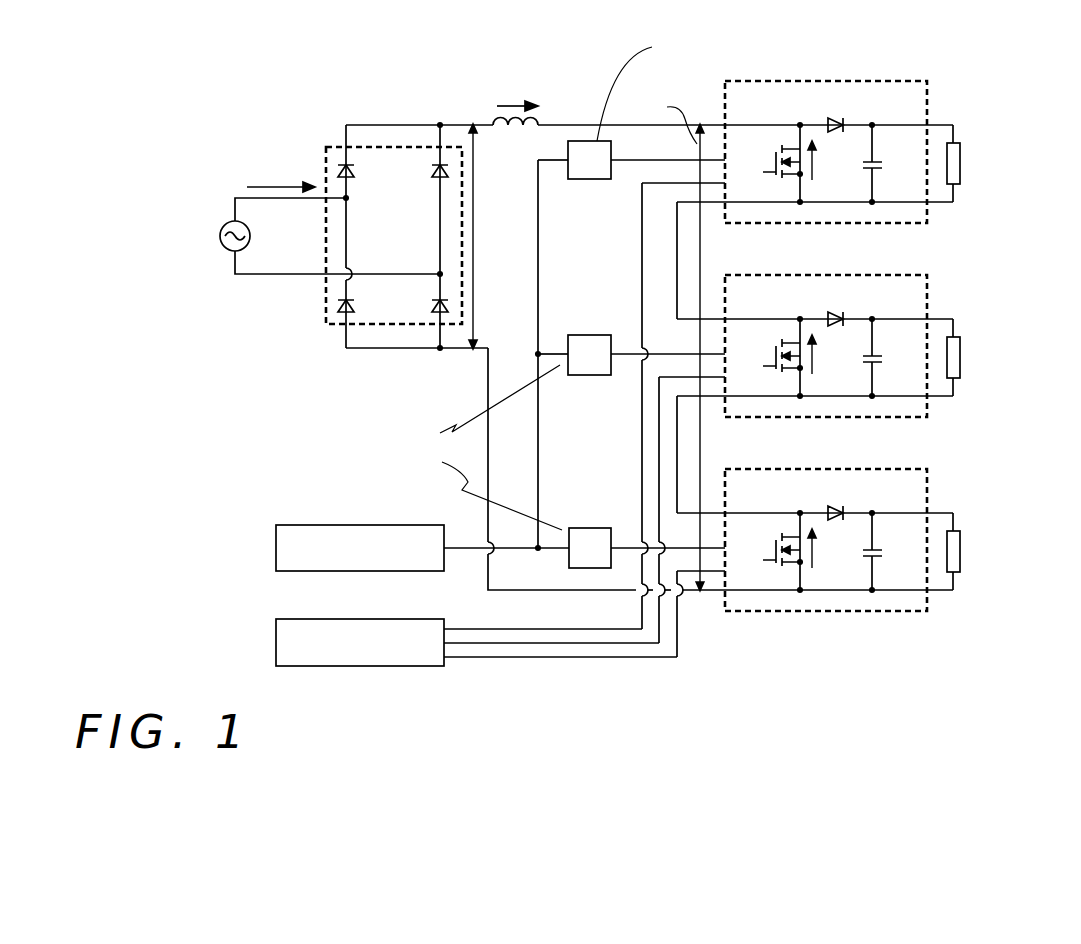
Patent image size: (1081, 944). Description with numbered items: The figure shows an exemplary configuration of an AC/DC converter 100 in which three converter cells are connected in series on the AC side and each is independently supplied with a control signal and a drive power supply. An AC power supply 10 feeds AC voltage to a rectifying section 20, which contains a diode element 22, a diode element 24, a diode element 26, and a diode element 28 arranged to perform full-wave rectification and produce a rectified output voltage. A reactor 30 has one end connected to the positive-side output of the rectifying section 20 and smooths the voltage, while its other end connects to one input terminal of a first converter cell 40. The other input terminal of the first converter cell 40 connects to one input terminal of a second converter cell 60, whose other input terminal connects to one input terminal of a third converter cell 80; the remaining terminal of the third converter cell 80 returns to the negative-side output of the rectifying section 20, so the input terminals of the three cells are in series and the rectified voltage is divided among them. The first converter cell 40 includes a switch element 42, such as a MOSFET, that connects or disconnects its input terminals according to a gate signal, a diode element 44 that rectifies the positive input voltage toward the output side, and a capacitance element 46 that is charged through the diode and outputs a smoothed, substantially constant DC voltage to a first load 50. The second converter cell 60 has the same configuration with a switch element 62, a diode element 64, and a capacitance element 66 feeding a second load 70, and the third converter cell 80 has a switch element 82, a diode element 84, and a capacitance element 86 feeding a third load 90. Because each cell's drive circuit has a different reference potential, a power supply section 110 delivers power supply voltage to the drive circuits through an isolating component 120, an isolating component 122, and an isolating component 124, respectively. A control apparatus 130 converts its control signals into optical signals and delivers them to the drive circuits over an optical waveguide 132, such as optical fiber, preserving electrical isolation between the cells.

The AC power supply 10 is at (218, 228).
The rectifying section 20 is at (398, 231).
The diode element 22 is at (348, 178).
The diode element 24 is at (356, 302).
The diode element 26 is at (437, 178).
The diode element 28 is at (430, 304).
The reactor 30 is at (512, 134).
The first converter cell 40 is at (815, 136).
The switch element 42 is at (773, 168).
The diode element 44 is at (827, 120).
The capacitance element 46 is at (875, 162).
The first load 50 is at (962, 168).
The second converter cell 60 is at (815, 330).
The switch element 62 is at (773, 362).
The diode element 64 is at (827, 314).
The capacitance element 66 is at (875, 356).
The second load 70 is at (962, 362).
The third converter cell 80 is at (815, 524).
The switch element 82 is at (773, 556).
The diode element 84 is at (827, 508).
The capacitance element 86 is at (875, 550).
The third load 90 is at (962, 556).
The AC/DC converter 100 is at (617, 742).
The power supply section 110 is at (384, 525).
The isolating component 120 is at (593, 180).
The isolating component 122 is at (593, 335).
The isolating component 124 is at (592, 528).
The control apparatus 130 is at (384, 619).
The optical waveguide 132 is at (484, 621).